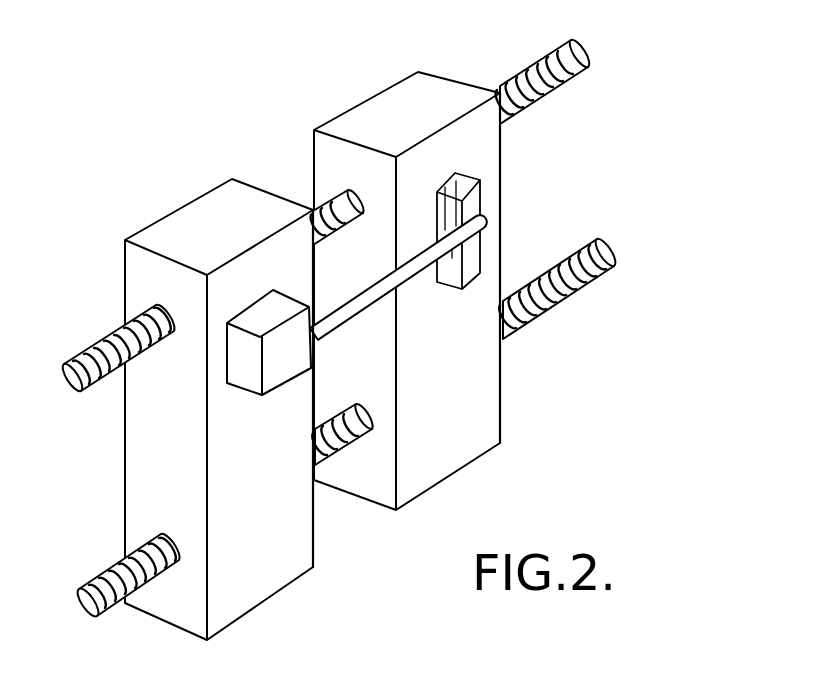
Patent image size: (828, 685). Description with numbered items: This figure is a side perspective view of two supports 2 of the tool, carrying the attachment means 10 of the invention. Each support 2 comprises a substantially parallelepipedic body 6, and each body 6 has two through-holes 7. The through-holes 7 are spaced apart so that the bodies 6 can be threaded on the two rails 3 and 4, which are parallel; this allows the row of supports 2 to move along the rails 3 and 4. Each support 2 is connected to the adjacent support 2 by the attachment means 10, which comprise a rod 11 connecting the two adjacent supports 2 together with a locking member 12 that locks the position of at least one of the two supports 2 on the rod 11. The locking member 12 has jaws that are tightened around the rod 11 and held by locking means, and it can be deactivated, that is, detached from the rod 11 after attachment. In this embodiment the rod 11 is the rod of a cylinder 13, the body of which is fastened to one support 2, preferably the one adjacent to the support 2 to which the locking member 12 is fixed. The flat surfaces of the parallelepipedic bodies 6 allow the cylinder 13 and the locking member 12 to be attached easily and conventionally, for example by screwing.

The support 2 is at (284, 331).
The rail 3 is at (103, 346).
The rail 4 is at (108, 571).
The parallelepipedic body 6 is at (260, 271).
The through-hole 7 is at (157, 537).
The attachment means 10 is at (474, 268).
The rod 11 is at (482, 274).
The locking member 12 is at (474, 200).
The cylinder 13 is at (283, 357).